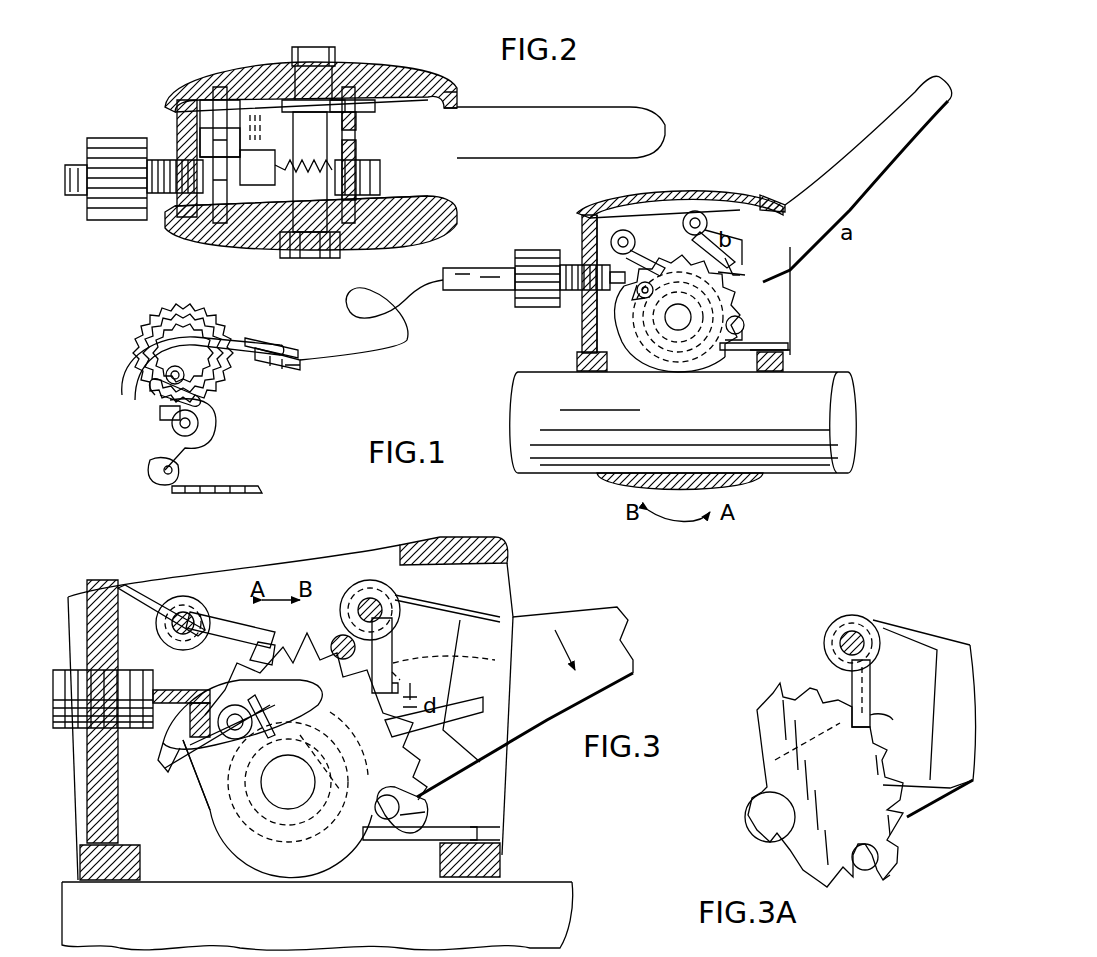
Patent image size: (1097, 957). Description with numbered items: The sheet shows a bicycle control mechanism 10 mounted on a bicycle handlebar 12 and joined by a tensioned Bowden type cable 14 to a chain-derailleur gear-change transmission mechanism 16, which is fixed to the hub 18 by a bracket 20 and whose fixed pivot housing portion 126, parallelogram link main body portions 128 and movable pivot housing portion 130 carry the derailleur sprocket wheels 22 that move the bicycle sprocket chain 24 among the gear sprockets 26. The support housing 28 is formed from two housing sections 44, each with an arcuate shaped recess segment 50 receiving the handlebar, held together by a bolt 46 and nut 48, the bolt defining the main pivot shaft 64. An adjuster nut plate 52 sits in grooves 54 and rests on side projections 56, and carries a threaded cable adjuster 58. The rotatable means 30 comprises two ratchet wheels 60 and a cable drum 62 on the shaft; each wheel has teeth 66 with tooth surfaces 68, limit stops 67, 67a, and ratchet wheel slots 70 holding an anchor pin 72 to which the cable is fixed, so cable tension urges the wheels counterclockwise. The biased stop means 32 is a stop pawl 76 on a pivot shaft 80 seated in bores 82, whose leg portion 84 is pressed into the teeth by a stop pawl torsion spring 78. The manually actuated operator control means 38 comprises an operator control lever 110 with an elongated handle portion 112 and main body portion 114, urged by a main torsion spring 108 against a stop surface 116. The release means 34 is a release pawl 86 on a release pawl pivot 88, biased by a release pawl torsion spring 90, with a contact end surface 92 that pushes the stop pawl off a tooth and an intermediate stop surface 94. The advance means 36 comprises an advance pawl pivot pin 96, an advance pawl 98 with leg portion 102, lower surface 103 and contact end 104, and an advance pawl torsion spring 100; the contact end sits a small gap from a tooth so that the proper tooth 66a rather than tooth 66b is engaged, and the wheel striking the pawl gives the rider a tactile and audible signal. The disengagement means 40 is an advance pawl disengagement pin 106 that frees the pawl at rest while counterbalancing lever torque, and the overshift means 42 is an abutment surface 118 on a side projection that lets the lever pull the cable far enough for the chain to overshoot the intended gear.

In FIG. 2, the bicycle control mechanism 10 is at (158, 72).
In FIG. 1, the bicycle control mechanism 10 is at (790, 112).
In FIG. 1, the bicycle handlebar 12 is at (805, 475).
In FIG. 3, the bicycle handlebar 12 is at (194, 924).
In FIG. 2, the Bowden type cable 14 is at (70, 196).
In FIG. 1, the Bowden type cable 14 is at (385, 355).
In FIG. 1, the chain-derailleur gear-change transmission mechanism 16 is at (255, 405).
In FIG. 1, the hub 18 is at (150, 342).
In FIG. 1, the bracket 20 is at (165, 372).
In FIG. 1, the derailleur sprocket wheels 22 is at (200, 428).
In FIG. 1, the bicycle sprocket chain 24 is at (230, 485).
In FIG. 1, the gear sprockets 26 is at (150, 302).
In FIG. 2, the support housing 28 is at (438, 62).
In FIG. 1, the support housing 28 is at (588, 200).
In FIG. 3, the support housing 28 is at (448, 956).
In FIG. 1, the rotatable means 30 is at (715, 357).
In FIG. 3, the rotatable means 30 is at (275, 862).
In FIG. 1, the biased stop means 32 is at (622, 218).
In FIG. 3, the biased stop means 32 is at (183, 580).
In FIG. 1, the release means 34 is at (622, 330).
In FIG. 3, the release means 34 is at (180, 782).
In FIG. 2, the advance means 36 is at (380, 188).
In FIG. 1, the advance means 36 is at (695, 208).
In FIG. 1, the manually actuated operator control means 38 is at (870, 208).
In FIG. 1, the disengagement means 40 is at (673, 230).
In FIG. 1, the overshift means 42 is at (900, 315).
In FIG. 2, the housing sections 44 is at (255, 70).
In FIG. 1, the housing sections 44 is at (730, 203).
In FIG. 2, the bolt 46 is at (340, 250).
In FIG. 2, the nut 48 is at (325, 60).
In FIG. 1, the arcuate shaped recess segment 50 is at (735, 465).
In FIG. 2, the adjuster nut plate 52 is at (200, 97).
In FIG. 1, the adjuster nut plate 52 is at (580, 285).
In FIG. 3, the adjuster nut plate 52 is at (120, 823).
In FIG. 2, the grooves 54 is at (176, 95).
In FIG. 1, the side projections 56 is at (545, 358).
In FIG. 3, the side projections 56 is at (503, 860).
In FIG. 2, the cable adjuster 58 is at (100, 137).
In FIG. 2, the ratchet wheels 60 is at (310, 165).
In FIG. 1, the ratchet wheels 60 is at (688, 355).
In FIG. 3, the ratchet wheels 60 is at (326, 866).
In FIG. 3A, the ratchet wheels 60 is at (858, 787).
In FIG. 2, the cable drum 62 is at (356, 142).
In FIG. 3, the cable drum 62 is at (350, 835).
In FIG. 2, the main pivot shaft 64 is at (312, 232).
In FIG. 1, the teeth 66 is at (700, 242).
In FIG. 3, the teeth 66 is at (455, 740).
In FIG. 1, the tooth 66a is at (750, 275).
In FIG. 1, the tooth 66b is at (730, 272).
In FIG. 1, the limit stop 67 is at (638, 296).
In FIG. 3, the limit stop 67 is at (163, 755).
In FIG. 1, the limit stop 67a is at (748, 338).
In FIG. 3, the limit stop 67a is at (430, 818).
In FIG. 3A, the limit stop 67a is at (890, 880).
In FIG. 3, the tooth surfaces 68 is at (290, 650).
In FIG. 3, the ratchet wheel slots 70 is at (430, 795).
In FIG. 1, the anchor pin 72 is at (745, 323).
In FIG. 3, the anchor pin 72 is at (392, 818).
In FIG. 3A, the anchor pin 72 is at (863, 872).
In FIG. 3, the stop pawl 76 is at (82, 593).
In FIG. 3, the stop pawl torsion spring 78 is at (135, 590).
In FIG. 2, the pivot shaft 80 is at (198, 120).
In FIG. 3, the pivot shaft 80 is at (193, 613).
In FIG. 2, the bores 82 is at (220, 86).
In FIG. 2, the leg portion 84 is at (255, 180).
In FIG. 3, the leg portion 84 is at (245, 618).
In FIG. 3, the release pawl 86 is at (197, 780).
In FIG. 3, the release pawl pivot 88 is at (235, 714).
In FIG. 3, the release pawl torsion spring 90 is at (195, 762).
In FIG. 3, the contact end surface 92 is at (270, 645).
In FIG. 3, the intermediate stop surface 94 is at (198, 712).
In FIG. 3, the advance pawl pivot pin 96 is at (372, 598).
In FIG. 3A, the advance pawl pivot pin 96 is at (840, 643).
In FIG. 3, the advance pawl 98 is at (355, 582).
In FIG. 3A, the advance pawl 98 is at (865, 617).
In FIG. 3, the advance pawl torsion spring 100 is at (432, 603).
In FIG. 3A, the advance pawl torsion spring 100 is at (907, 640).
In FIG. 3, the leg portion 102 is at (400, 672).
In FIG. 3, the lower surface 103 is at (395, 655).
In FIG. 3A, the lower surface 103 is at (850, 700).
In FIG. 3, the contact end 104 is at (397, 685).
In FIG. 3A, the contact end 104 is at (899, 732).
In FIG. 3, the advance pawl disengagement pin 106 is at (340, 635).
In FIG. 1, the main torsion spring 108 is at (792, 346).
In FIG. 3, the main torsion spring 108 is at (482, 828).
In FIG. 1, the operator control lever 110 is at (895, 170).
In FIG. 3, the operator control lever 110 is at (575, 605).
In FIG. 3A, the operator control lever 110 is at (920, 812).
In FIG. 1, the elongated handle portion 112 is at (850, 175).
In FIG. 3, the main body portion 114 is at (448, 712).
In FIG. 1, the stop surface 116 is at (780, 205).
In FIG. 3, the stop surface 116 is at (508, 560).
In FIG. 1, the abutment surface 118 is at (778, 352).
In FIG. 3, the abutment surface 118 is at (503, 833).
In FIG. 1, the fixed pivot housing portion 126 is at (150, 393).
In FIG. 1, the parallelogram link main body portions 128 is at (165, 420).
In FIG. 1, the movable pivot housing portion 130 is at (232, 385).